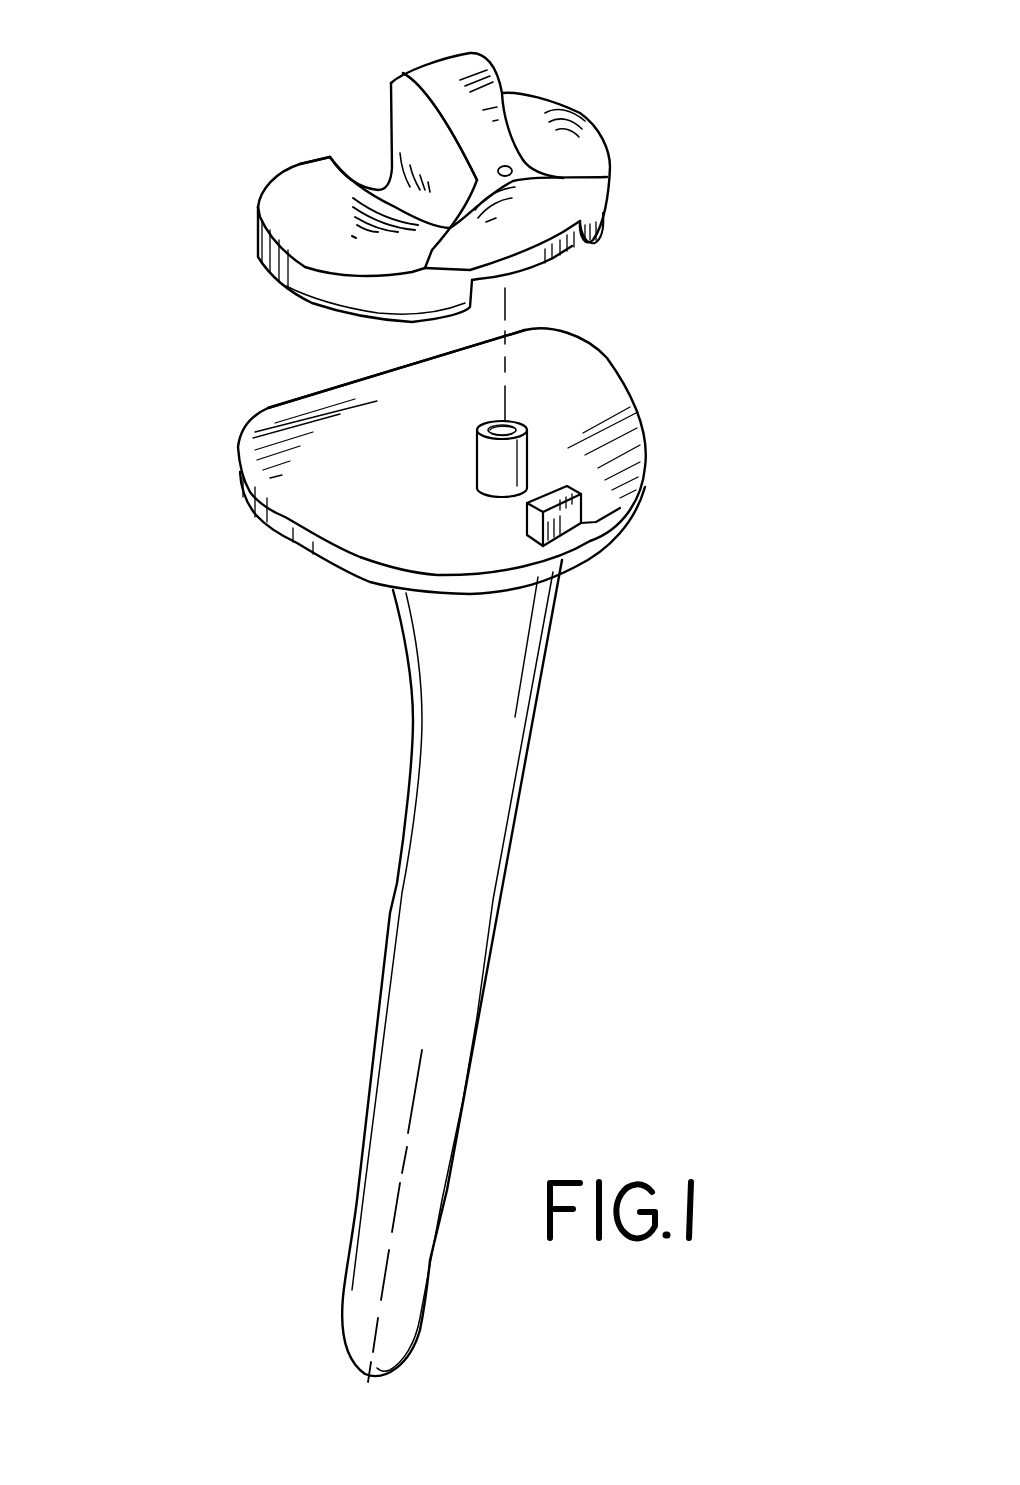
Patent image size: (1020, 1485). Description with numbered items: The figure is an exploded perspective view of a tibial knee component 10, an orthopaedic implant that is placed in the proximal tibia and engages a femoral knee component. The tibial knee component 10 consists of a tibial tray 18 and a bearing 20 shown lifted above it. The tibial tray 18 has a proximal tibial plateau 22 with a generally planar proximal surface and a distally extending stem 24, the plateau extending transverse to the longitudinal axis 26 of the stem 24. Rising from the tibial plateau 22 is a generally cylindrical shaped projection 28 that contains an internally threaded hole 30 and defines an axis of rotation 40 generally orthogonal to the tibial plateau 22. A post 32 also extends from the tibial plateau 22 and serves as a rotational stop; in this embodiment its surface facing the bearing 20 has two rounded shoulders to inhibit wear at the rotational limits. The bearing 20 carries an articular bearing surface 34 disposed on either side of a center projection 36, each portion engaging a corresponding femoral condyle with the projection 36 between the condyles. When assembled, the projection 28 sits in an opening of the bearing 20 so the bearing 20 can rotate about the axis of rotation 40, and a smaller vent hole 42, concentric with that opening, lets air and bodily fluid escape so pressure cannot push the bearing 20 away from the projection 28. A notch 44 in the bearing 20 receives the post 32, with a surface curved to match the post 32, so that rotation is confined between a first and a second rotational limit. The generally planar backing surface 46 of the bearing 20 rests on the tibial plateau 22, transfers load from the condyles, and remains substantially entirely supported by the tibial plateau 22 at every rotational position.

The tibial knee component 10 is at (700, 256).
The tibial tray 18 is at (213, 479).
The bearing 20 is at (213, 225).
The tibial plateau 22 is at (590, 407).
The stem 24 is at (507, 860).
The longitudinal axis 26 is at (415, 1100).
The projection 28 is at (478, 461).
The internally threaded hole 30 is at (498, 424).
The post 32 is at (565, 515).
The articular bearing surface 34 is at (293, 192).
The center projection 36 is at (437, 60).
The axis of rotation 40 is at (503, 368).
The vent hole 42 is at (509, 170).
The notch 44 is at (572, 247).
The backing surface 46 is at (302, 293).